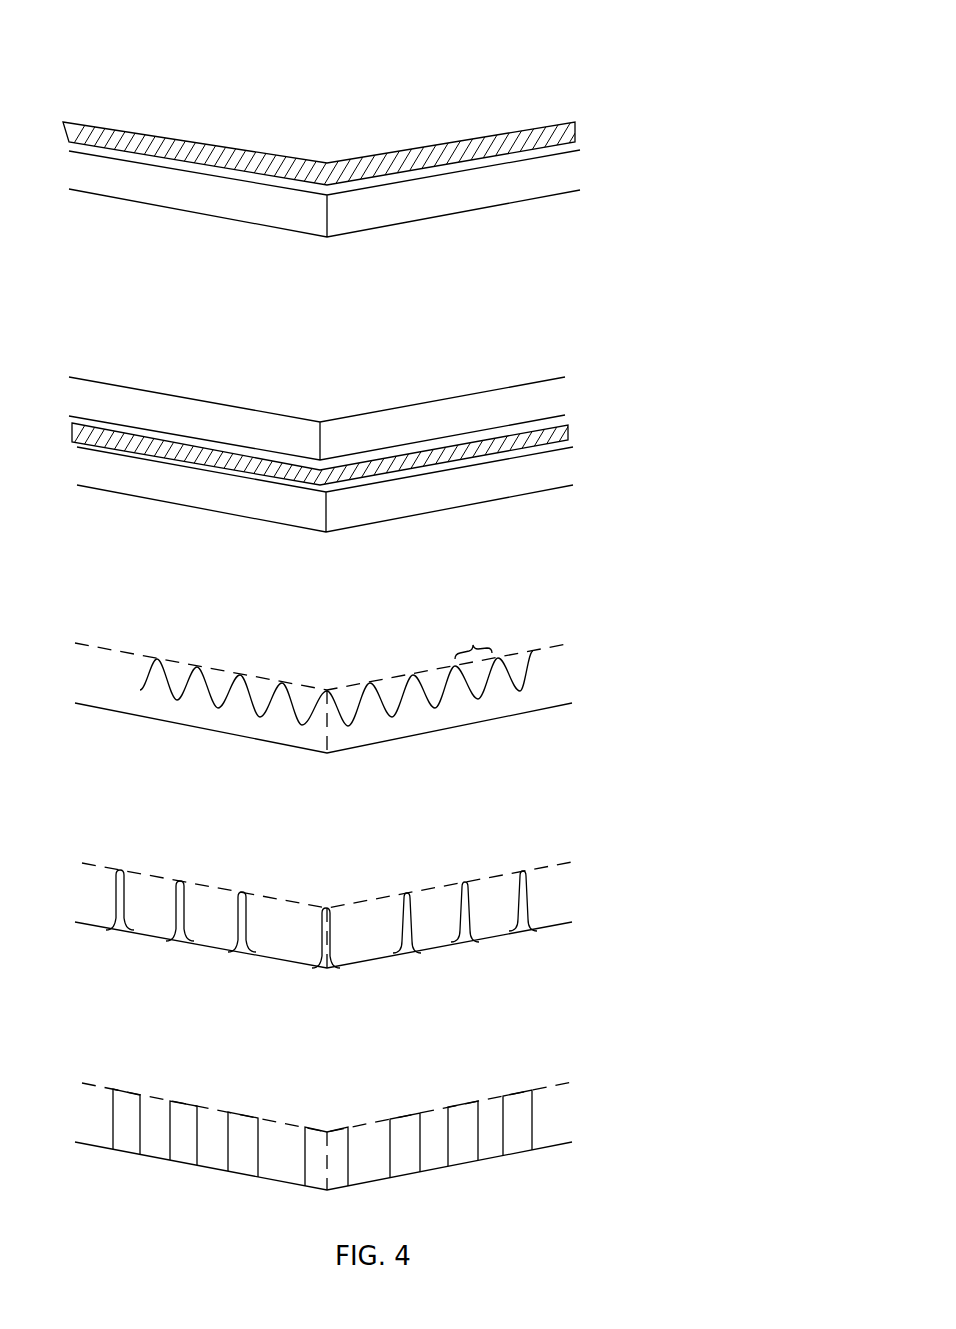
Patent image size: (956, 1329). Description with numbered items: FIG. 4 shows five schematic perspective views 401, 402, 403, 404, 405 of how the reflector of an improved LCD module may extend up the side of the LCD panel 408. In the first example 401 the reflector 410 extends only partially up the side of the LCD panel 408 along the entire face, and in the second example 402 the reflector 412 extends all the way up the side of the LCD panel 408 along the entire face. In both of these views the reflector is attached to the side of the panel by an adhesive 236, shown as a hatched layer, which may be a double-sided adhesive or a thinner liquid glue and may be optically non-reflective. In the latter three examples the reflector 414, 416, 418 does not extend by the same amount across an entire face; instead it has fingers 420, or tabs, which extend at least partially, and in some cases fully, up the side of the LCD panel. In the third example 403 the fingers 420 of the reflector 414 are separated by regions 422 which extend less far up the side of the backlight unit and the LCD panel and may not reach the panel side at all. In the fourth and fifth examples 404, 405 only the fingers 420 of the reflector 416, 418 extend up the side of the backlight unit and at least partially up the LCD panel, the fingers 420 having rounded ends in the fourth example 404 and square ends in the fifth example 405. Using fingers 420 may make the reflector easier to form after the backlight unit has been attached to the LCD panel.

The adhesive 236 is at (578, 131).
The first example 401 is at (722, 365).
The second example 402 is at (722, 83).
The third example 403 is at (722, 616).
The fourth example 404 is at (540, 410).
The fifth example 405 is at (722, 1053).
The LCD panel 408 is at (192, 72).
The reflector 410 is at (460, 202).
The reflector 412 is at (443, 488).
The reflector 414 is at (457, 717).
The reflector 416 is at (520, 920).
The reflector 418 is at (517, 1135).
The fingers 420 is at (497, 685).
The regions 422 is at (476, 640).